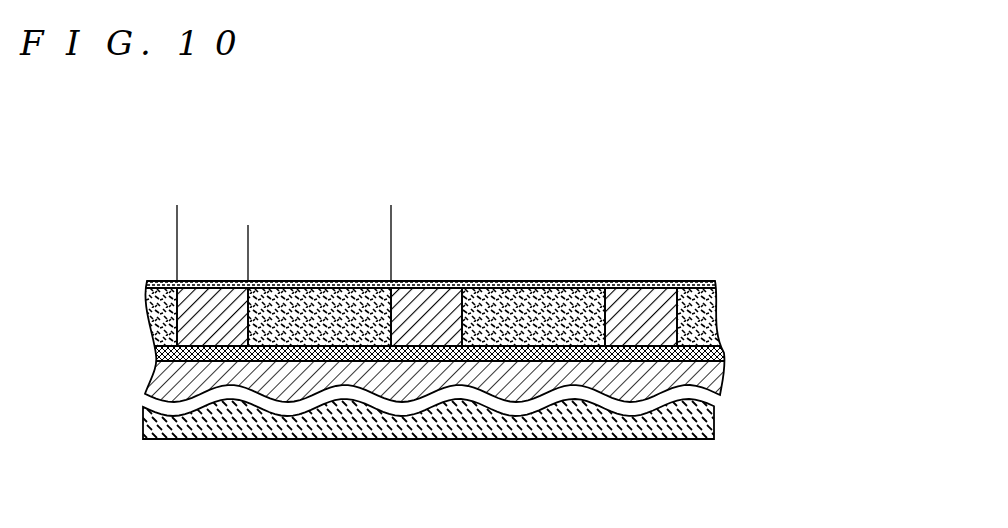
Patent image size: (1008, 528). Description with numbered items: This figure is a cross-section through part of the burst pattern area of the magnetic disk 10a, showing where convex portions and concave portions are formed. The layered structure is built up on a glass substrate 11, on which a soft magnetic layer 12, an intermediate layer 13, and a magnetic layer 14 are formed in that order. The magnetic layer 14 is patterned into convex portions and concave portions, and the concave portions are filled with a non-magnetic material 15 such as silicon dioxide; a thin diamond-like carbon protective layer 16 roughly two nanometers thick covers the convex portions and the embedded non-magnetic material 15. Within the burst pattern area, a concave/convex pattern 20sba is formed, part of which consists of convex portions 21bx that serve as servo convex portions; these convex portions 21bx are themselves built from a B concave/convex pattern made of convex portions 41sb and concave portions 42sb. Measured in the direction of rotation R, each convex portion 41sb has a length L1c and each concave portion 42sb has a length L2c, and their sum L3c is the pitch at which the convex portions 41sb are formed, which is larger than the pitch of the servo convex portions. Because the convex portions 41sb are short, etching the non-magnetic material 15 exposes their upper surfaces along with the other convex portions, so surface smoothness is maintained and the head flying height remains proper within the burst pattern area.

The magnetic disk 10a is at (490, 205).
The glass substrate 11 is at (705, 422).
The soft magnetic layer 12 is at (723, 377).
The intermediate layer 13 is at (723, 354).
The magnetic layer 14 is at (658, 325).
The non-magnetic material 15 is at (708, 317).
The protective layer 16 is at (720, 281).
The convex portions 41sb is at (440, 318).
The concave portions 42sb is at (359, 320).
The convex portions 21bx is at (578, 273).
The concave/convex pattern 20sba is at (630, 258).
The direction of rotation R is at (725, 193).
The length of convex portion 41sb L1c is at (287, 255).
The length of concave portion 42sb L2c is at (391, 233).
The pitch of convex portions 41sb L3c is at (391, 212).